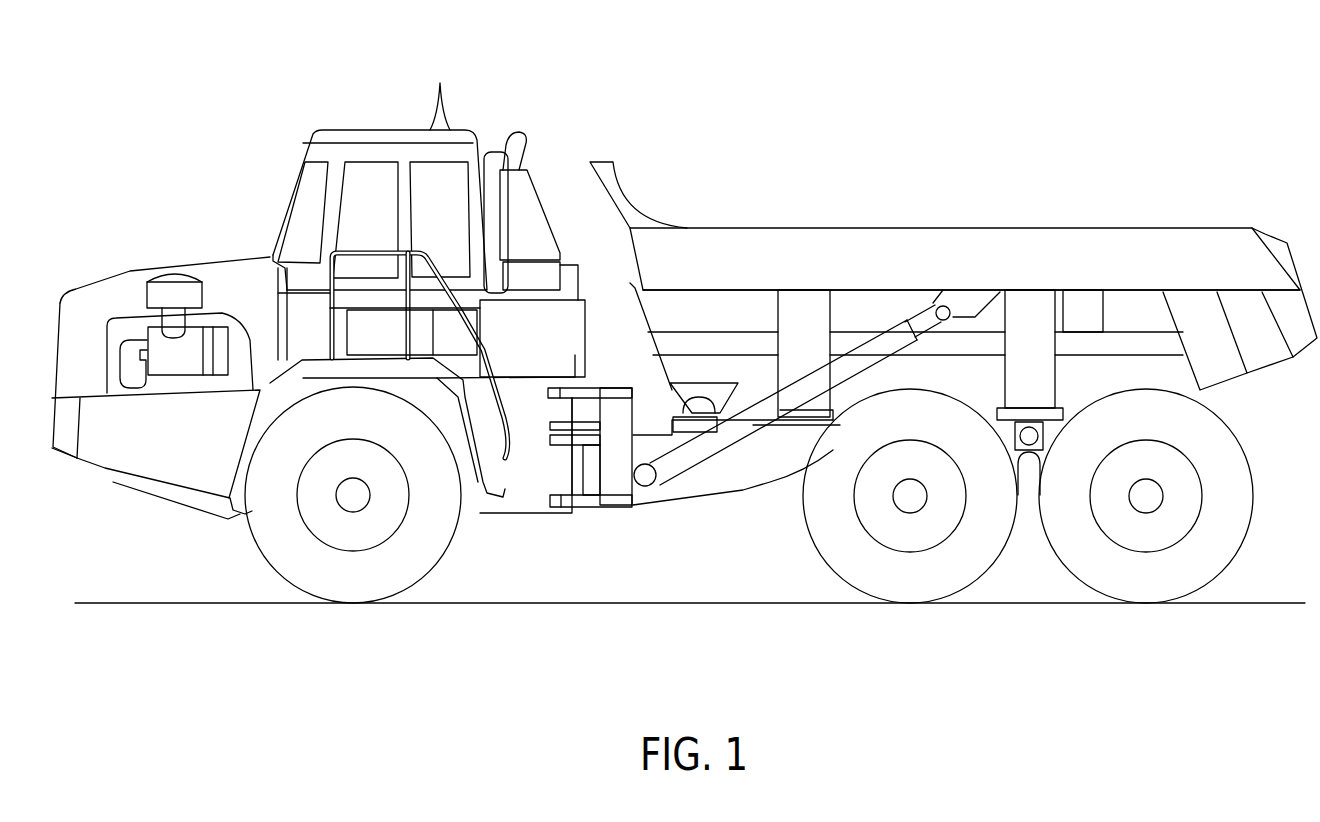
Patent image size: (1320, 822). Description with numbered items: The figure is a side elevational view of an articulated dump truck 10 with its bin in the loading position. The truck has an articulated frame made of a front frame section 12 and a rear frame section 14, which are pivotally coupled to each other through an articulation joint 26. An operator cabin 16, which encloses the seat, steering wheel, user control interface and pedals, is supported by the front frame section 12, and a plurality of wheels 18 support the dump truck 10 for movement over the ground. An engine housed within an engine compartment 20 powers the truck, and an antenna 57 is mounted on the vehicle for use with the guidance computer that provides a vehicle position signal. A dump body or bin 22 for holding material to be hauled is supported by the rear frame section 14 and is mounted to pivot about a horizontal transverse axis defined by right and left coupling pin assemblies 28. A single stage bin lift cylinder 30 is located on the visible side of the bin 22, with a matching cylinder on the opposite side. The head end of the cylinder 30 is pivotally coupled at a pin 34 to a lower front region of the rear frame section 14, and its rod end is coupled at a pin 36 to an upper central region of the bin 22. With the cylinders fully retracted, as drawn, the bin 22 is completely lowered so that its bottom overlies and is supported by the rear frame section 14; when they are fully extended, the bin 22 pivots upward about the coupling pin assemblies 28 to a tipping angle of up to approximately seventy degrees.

The articulated dump truck 10 is at (930, 122).
The front frame section 12 is at (124, 497).
The rear frame section 14 is at (767, 493).
The operator cabin 16 is at (378, 128).
The wheels 18 is at (350, 599).
The engine compartment 20 is at (99, 293).
The dump body or bin 22 is at (797, 228).
The articulation joint 26 is at (597, 508).
The coupling pin assembly 28 is at (1029, 443).
The bin lift cylinder 30 is at (690, 467).
The pin 34 is at (647, 483).
The pin 36 is at (940, 306).
The antenna 57 is at (443, 105).